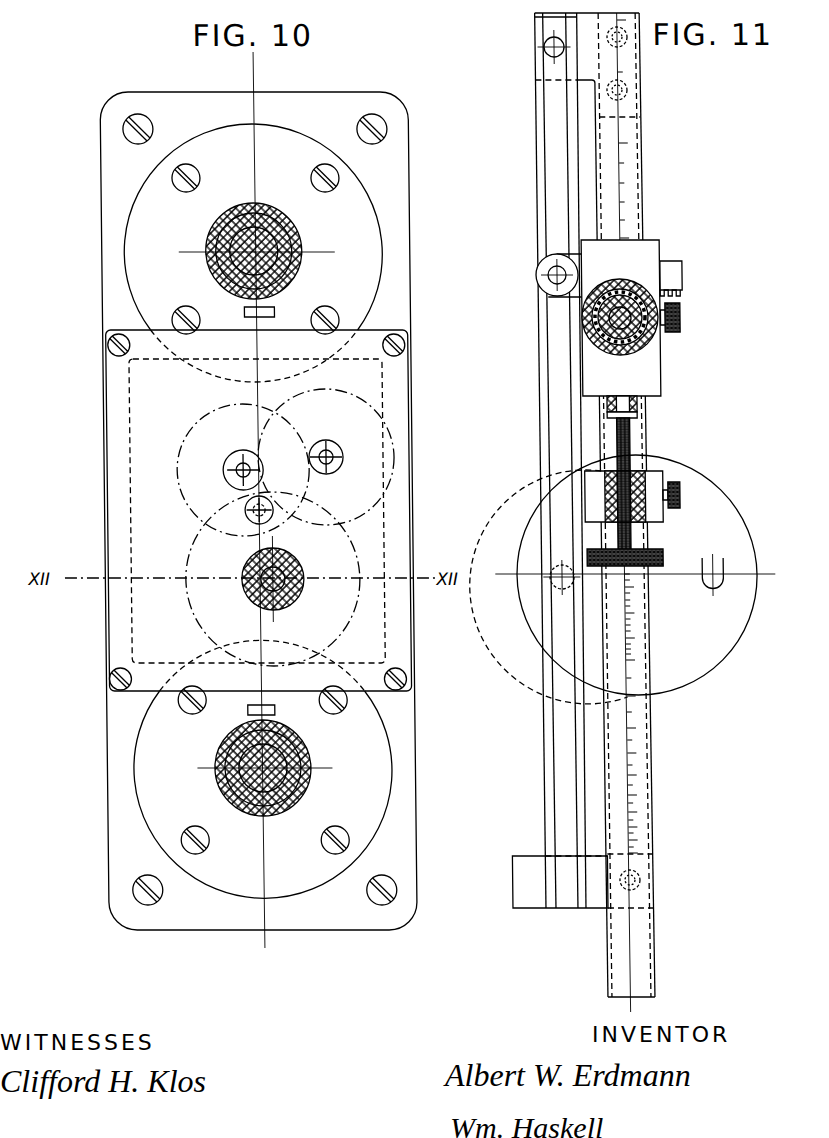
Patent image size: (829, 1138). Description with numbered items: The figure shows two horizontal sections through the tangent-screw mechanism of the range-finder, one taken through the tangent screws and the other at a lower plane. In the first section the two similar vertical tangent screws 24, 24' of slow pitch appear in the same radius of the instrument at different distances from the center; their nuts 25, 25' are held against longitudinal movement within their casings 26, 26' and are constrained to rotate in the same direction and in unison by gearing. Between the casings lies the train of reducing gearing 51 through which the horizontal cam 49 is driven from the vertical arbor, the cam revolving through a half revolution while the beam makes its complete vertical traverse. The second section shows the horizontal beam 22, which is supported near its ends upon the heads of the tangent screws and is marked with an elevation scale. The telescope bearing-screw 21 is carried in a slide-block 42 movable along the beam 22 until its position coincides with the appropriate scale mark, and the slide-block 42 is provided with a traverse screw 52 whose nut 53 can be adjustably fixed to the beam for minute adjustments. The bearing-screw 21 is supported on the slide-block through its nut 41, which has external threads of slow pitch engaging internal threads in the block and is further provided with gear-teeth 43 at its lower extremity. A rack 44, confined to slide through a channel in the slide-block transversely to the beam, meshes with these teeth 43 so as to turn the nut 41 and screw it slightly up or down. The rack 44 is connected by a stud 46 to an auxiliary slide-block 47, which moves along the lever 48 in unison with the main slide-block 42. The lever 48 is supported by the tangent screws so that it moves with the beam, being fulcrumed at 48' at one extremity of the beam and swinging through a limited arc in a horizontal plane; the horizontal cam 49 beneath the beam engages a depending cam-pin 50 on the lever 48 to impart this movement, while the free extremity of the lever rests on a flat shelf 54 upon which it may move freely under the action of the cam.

In FIG. 10, the vertical tangent screw 24 is at (292, 246).
In FIG. 10, the nut 25 is at (285, 251).
In FIG. 10, the casing 26 is at (231, 251).
In FIG. 10, the vertical tangent screw 24' is at (301, 759).
In FIG. 10, the nut 25' is at (292, 768).
In FIG. 10, the casing 26' is at (241, 768).
In FIG. 10, the train of reducing gearing 51 is at (237, 483).
In FIG. 11, the lever 48 is at (570, 460).
In FIG. 11, the fulcrum 48' is at (524, 44).
In FIG. 11, the auxiliary slide-block 47 is at (552, 254).
In FIG. 11, the stud 46 is at (550, 276).
In FIG. 11, the bearing-screw 21 is at (576, 323).
In FIG. 11, the nut 41 is at (654, 333).
In FIG. 11, the slide-block 42 is at (644, 372).
In FIG. 11, the gear-teeth 43 is at (659, 306).
In FIG. 11, the rack 44 is at (669, 274).
In FIG. 11, the traverse screw 52 is at (622, 428).
In FIG. 11, the nut 53 is at (647, 477).
In FIG. 11, the cam-pin 50 is at (546, 577).
In FIG. 11, the horizontal cam 49 is at (685, 667).
In FIG. 11, the flat shelf 54 is at (525, 880).
In FIG. 11, the horizontal beam 22 is at (628, 927).